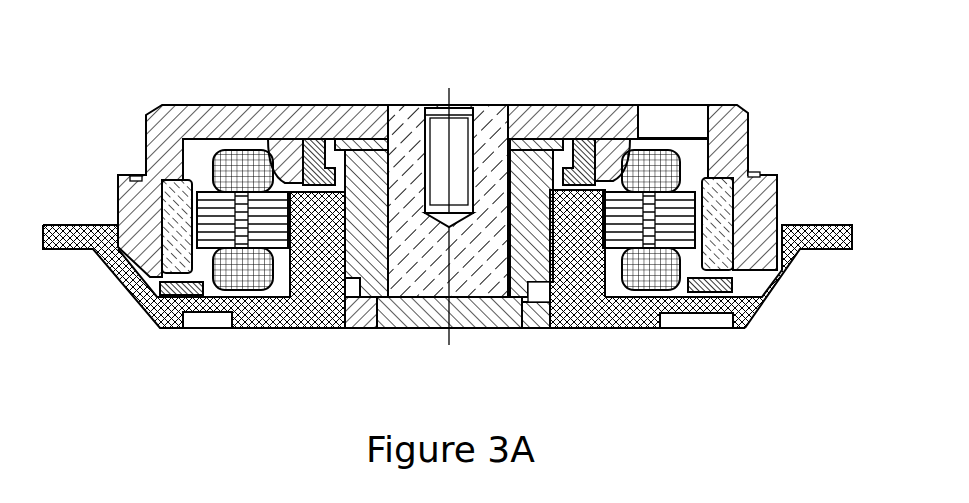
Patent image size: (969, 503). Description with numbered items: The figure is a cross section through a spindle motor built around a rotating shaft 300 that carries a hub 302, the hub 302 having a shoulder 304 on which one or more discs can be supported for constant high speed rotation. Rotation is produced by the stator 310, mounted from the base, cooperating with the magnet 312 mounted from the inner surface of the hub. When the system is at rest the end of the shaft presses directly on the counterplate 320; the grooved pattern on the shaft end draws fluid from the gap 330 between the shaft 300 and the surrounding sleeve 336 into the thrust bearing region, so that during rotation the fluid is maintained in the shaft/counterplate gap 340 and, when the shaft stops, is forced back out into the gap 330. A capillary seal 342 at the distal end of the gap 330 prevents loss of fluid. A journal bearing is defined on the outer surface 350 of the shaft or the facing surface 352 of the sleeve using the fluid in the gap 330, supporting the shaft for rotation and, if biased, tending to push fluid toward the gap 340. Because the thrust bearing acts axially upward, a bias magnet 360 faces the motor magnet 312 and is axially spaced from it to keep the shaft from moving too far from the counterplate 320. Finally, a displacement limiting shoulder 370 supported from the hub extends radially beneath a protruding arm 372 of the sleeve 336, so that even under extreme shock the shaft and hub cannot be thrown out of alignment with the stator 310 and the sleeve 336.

The shaft 300 is at (489, 152).
The hub 302 is at (727, 120).
The shoulder 304 is at (756, 172).
The stator 310 is at (693, 306).
The magnet 312 is at (720, 208).
The counterplate 320 is at (410, 328).
The gap 330 is at (343, 140).
The sleeve 336 is at (597, 320).
The gap 340 is at (470, 300).
The capillary seal 342 is at (370, 140).
The outer surface 350 is at (530, 312).
The facing surface 352 is at (576, 150).
The bias magnet 360 is at (187, 300).
The displacement limiting shoulder 370 is at (276, 146).
The protruding arm 372 is at (312, 140).